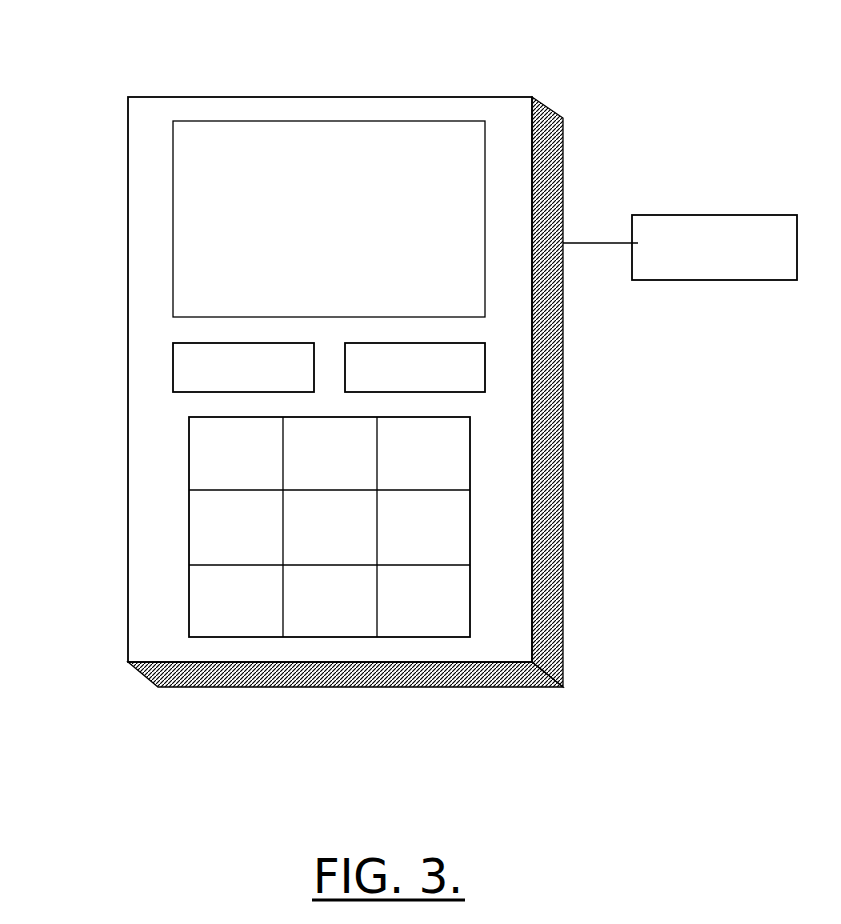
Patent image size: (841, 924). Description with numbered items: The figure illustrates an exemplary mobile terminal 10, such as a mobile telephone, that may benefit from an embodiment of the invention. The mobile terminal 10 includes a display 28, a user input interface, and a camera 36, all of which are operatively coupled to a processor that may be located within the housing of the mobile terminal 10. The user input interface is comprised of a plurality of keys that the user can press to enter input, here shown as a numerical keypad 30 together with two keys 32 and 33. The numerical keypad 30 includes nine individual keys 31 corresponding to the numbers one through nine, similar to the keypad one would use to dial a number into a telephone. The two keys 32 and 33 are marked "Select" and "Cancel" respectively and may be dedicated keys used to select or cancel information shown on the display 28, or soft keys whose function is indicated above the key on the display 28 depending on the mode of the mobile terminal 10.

The mobile terminal 10 is at (157, 97).
The display 28 is at (394, 143).
The camera 36 is at (697, 214).
The Select key 32 is at (183, 368).
The Cancel key 33 is at (475, 372).
The individual keys 31 is at (203, 513).
The numerical keypad 30 is at (244, 554).